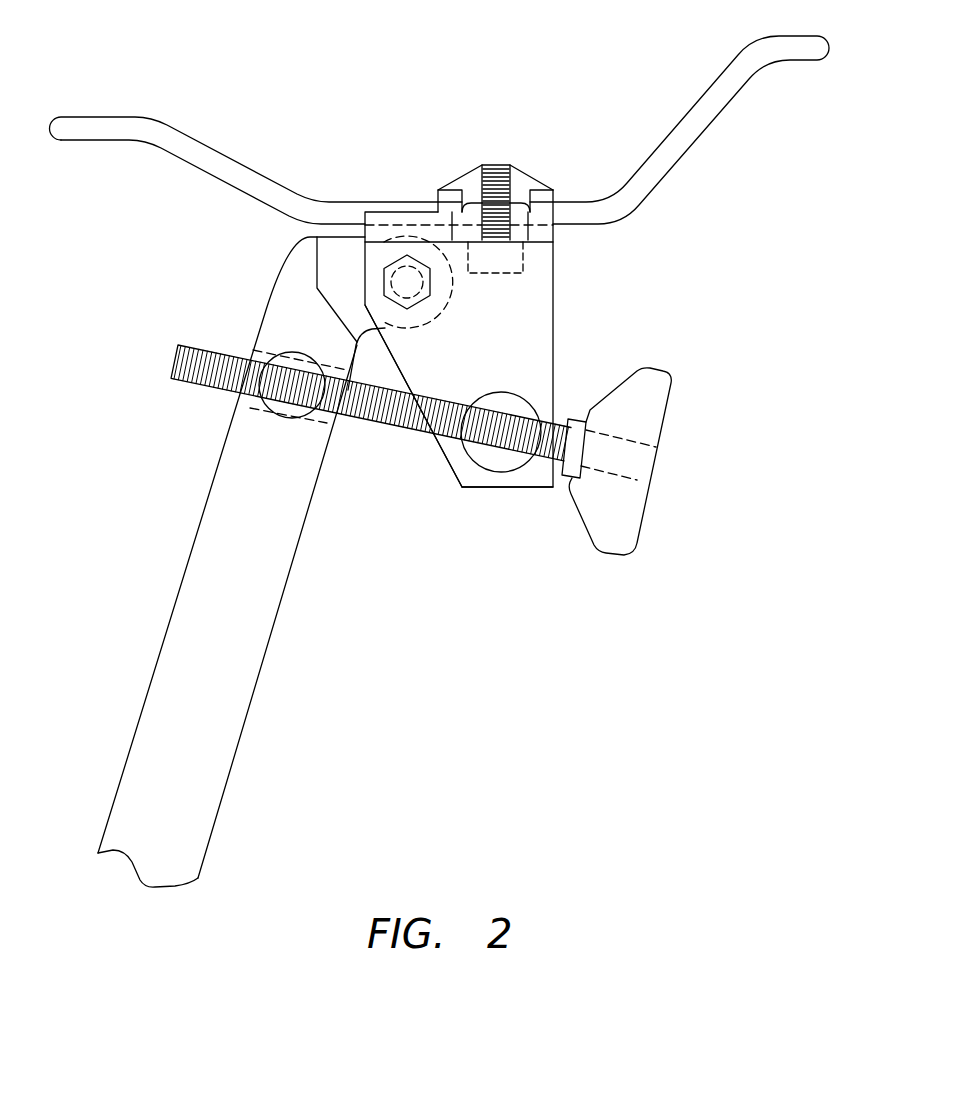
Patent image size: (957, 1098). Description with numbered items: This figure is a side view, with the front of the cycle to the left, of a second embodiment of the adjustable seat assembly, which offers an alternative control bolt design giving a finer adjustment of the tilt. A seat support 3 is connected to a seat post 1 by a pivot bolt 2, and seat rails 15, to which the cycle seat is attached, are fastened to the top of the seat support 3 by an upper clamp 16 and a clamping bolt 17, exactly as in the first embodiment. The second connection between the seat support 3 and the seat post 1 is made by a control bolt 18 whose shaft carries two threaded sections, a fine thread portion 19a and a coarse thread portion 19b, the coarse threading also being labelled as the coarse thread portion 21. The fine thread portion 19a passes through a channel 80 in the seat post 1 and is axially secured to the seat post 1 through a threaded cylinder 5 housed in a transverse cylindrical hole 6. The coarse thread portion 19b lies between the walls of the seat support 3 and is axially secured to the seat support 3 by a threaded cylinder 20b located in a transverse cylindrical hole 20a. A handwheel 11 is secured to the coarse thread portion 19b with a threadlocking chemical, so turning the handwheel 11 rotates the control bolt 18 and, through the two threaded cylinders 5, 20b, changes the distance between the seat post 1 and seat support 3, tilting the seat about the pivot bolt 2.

The seat post 1 is at (223, 602).
The pivot bolt 2 is at (403, 285).
The seat support 3 is at (530, 292).
The threaded cylinder 5 is at (287, 410).
The transverse cylindrical hole 6 is at (270, 415).
The handwheel 11 is at (642, 412).
The seat rails 15 is at (690, 123).
The upper clamp 16 is at (472, 177).
The clamping bolt 17 is at (494, 165).
The control bolt 18 is at (403, 440).
The fine thread portion 19a is at (220, 343).
The coarse thread portion 19b is at (440, 400).
The transverse cylindrical hole 20a is at (495, 470).
The threaded cylinder 20b is at (513, 407).
The coarse thread portion 21 is at (622, 457).
The channel 80 is at (250, 405).